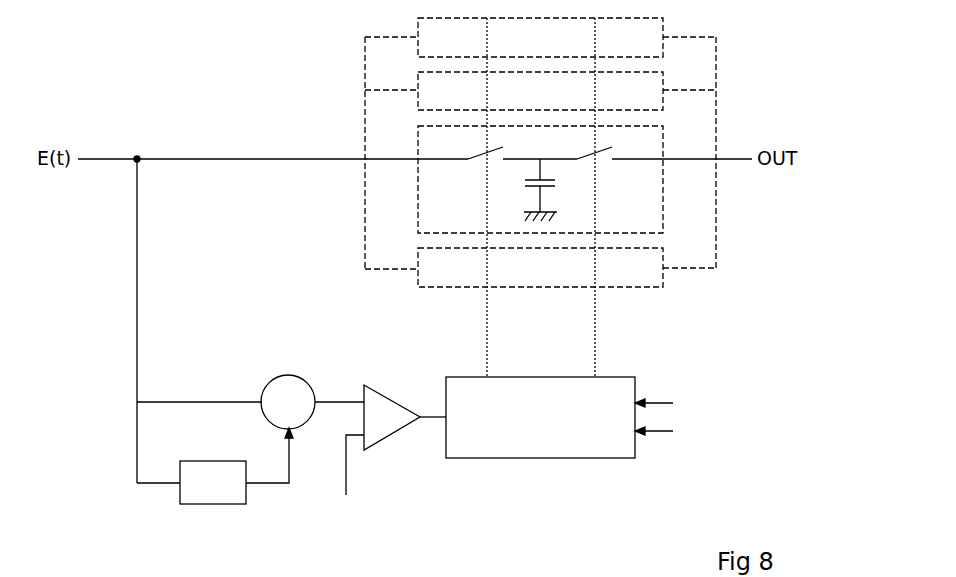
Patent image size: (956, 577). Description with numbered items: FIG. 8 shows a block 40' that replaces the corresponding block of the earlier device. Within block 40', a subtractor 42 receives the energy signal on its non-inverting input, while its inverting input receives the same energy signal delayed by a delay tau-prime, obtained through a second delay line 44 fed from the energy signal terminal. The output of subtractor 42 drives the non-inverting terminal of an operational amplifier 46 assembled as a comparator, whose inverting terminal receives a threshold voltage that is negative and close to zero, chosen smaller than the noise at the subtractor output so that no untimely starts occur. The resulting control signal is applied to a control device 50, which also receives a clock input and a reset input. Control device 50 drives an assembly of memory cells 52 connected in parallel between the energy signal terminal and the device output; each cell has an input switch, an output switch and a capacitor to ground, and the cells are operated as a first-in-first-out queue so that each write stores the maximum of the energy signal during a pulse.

The block 40' is at (422, 368).
The subtractor 42 is at (287, 375).
The second delay line 44 is at (205, 504).
The operational amplifier 46 is at (386, 437).
The control device 50 is at (576, 439).
The memory cells 52 is at (663, 37).